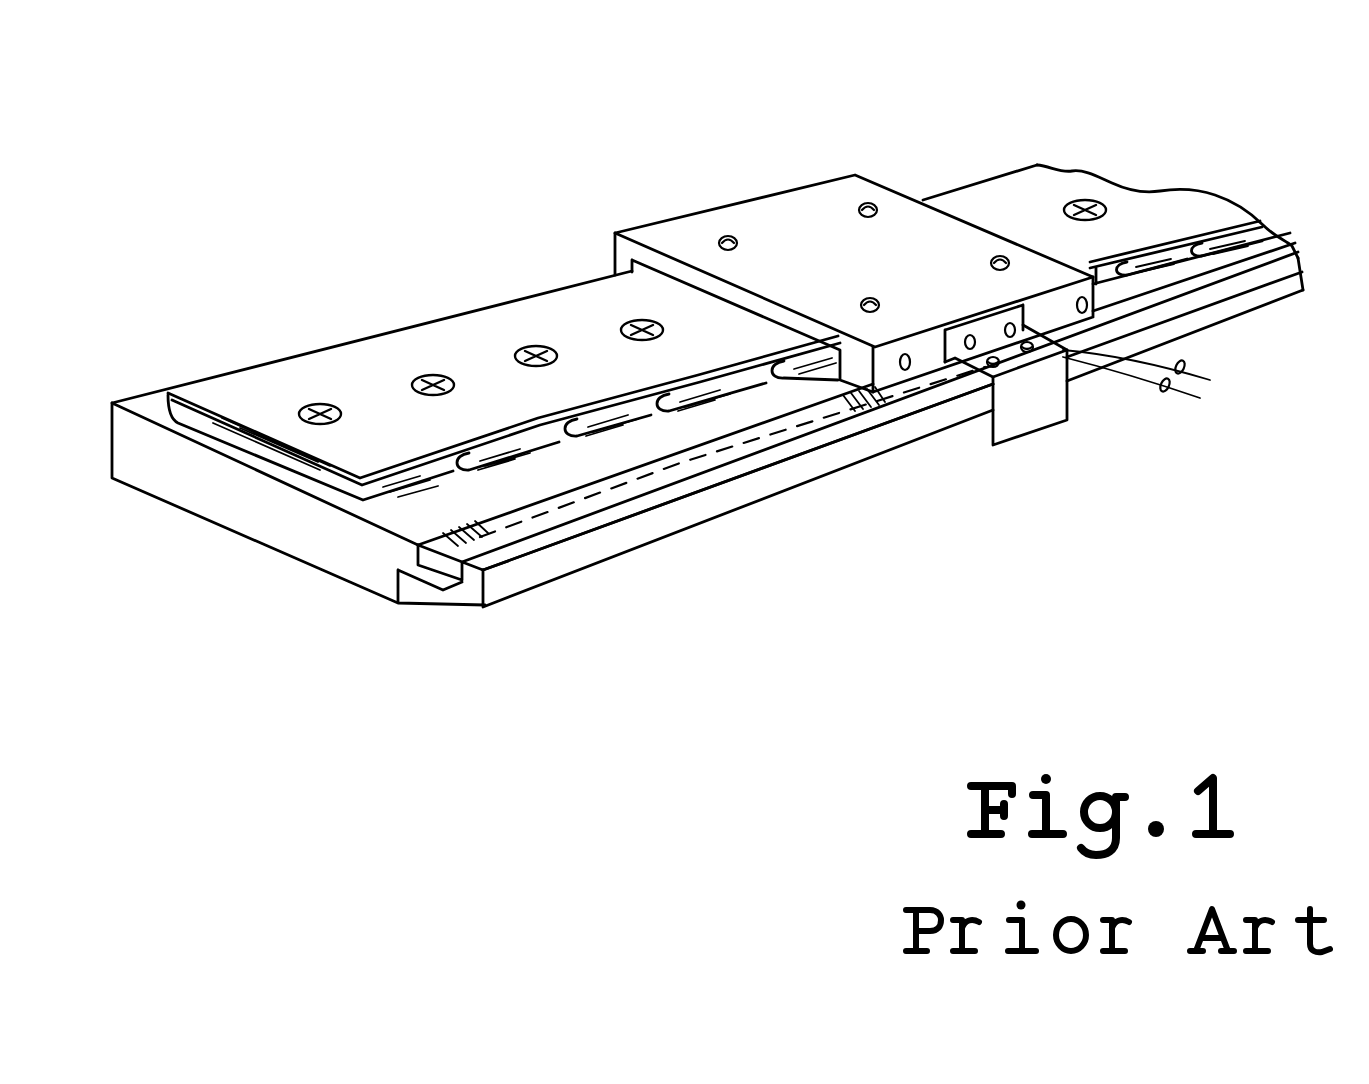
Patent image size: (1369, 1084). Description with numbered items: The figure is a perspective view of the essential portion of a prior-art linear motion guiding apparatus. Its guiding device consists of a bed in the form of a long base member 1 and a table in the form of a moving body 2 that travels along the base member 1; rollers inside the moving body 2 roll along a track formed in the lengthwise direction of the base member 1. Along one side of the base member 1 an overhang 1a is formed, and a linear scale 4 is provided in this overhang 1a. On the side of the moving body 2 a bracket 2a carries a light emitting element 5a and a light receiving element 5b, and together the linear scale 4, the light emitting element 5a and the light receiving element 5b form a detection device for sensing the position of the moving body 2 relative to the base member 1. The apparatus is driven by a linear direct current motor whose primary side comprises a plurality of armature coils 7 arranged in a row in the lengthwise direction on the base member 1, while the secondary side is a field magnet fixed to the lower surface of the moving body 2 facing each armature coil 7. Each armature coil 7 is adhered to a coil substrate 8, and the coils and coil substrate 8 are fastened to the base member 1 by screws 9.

The base member 1 is at (338, 562).
The overhang 1a is at (797, 473).
The moving body 2 is at (793, 213).
The bracket 2a is at (1018, 425).
The linear scale 4 is at (810, 412).
The light emitting element 5a is at (993, 362).
The light receiving element 5b is at (1012, 362).
The armature coils 7 is at (460, 473).
The coil substrate 8 is at (370, 370).
The screws 9 is at (533, 347).